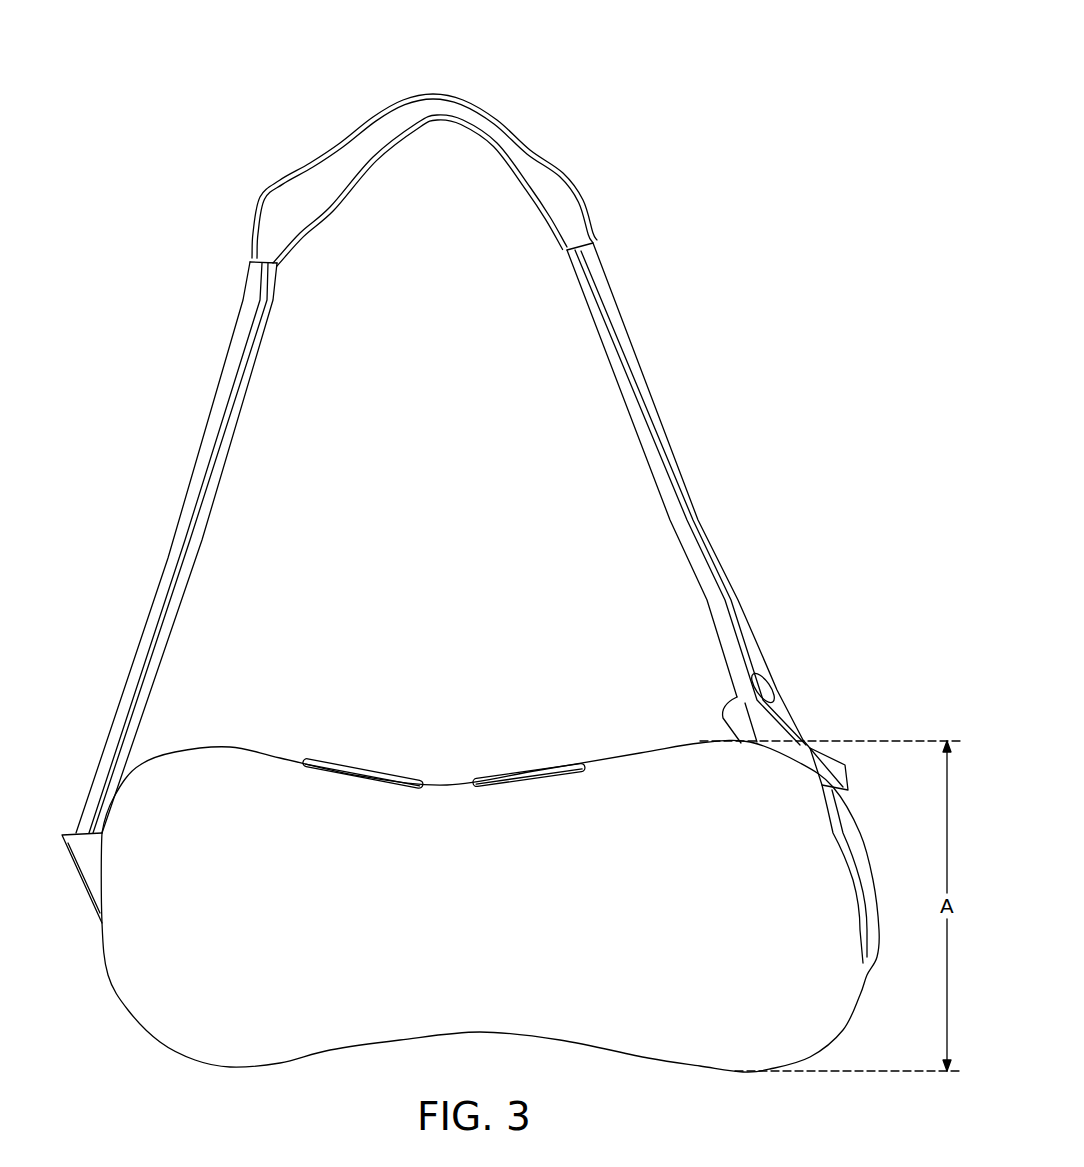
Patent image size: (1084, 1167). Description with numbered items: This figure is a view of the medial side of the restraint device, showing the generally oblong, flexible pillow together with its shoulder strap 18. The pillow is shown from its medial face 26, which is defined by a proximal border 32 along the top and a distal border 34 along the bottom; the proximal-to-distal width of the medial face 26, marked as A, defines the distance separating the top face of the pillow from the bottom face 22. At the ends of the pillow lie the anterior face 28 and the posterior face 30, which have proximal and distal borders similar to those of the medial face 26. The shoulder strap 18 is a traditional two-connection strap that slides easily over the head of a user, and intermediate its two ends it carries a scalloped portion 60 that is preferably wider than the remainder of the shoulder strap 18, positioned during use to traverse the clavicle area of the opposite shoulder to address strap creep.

The shoulder strap 18 is at (673, 405).
The bottom face 22 is at (645, 1065).
The medial face 26 is at (485, 920).
The anterior face 28 is at (867, 995).
The posterior face 30 is at (102, 968).
The proximal border 32 is at (600, 760).
The distal border 34 is at (737, 1072).
The scalloped portion 60 is at (487, 72).